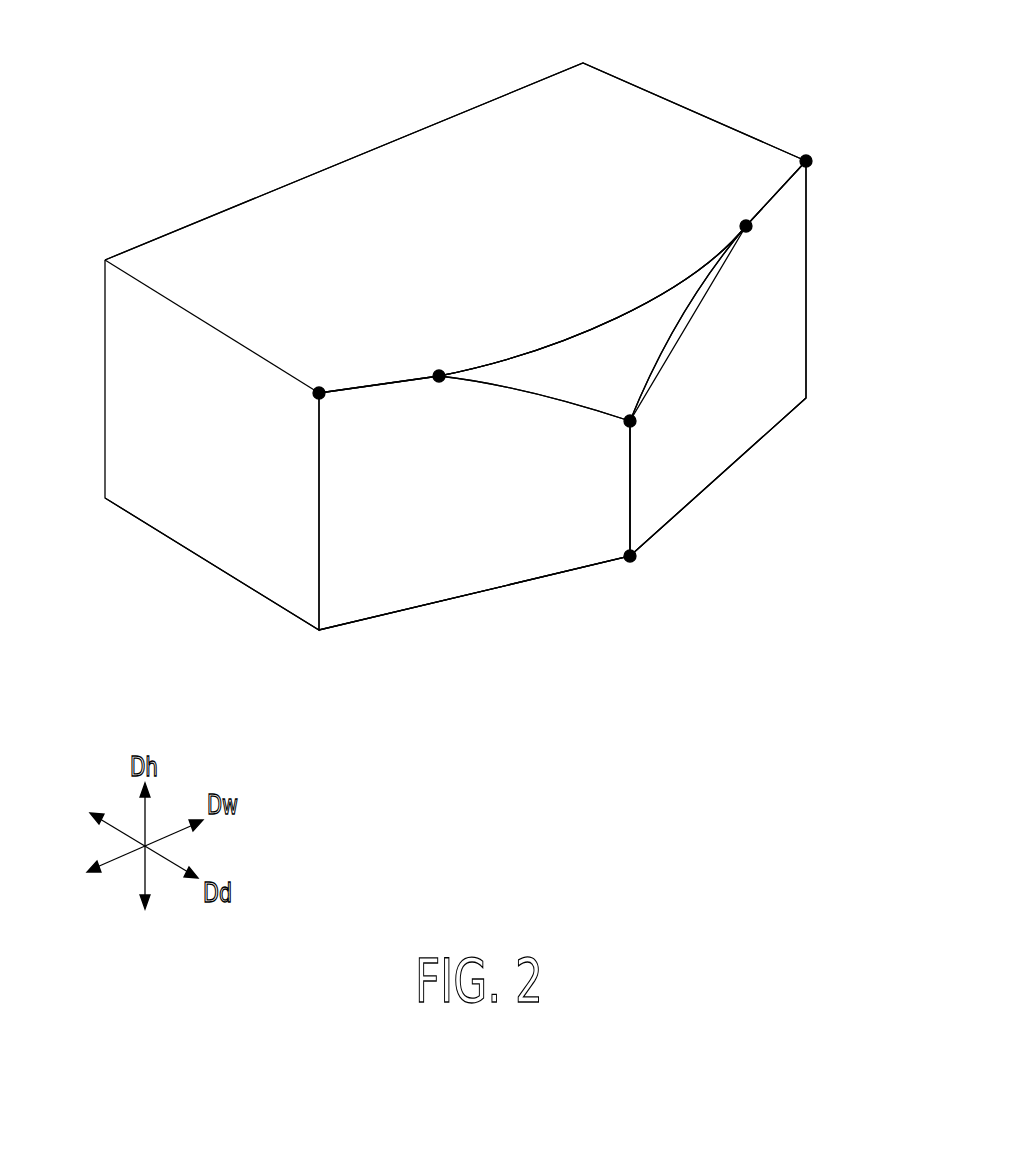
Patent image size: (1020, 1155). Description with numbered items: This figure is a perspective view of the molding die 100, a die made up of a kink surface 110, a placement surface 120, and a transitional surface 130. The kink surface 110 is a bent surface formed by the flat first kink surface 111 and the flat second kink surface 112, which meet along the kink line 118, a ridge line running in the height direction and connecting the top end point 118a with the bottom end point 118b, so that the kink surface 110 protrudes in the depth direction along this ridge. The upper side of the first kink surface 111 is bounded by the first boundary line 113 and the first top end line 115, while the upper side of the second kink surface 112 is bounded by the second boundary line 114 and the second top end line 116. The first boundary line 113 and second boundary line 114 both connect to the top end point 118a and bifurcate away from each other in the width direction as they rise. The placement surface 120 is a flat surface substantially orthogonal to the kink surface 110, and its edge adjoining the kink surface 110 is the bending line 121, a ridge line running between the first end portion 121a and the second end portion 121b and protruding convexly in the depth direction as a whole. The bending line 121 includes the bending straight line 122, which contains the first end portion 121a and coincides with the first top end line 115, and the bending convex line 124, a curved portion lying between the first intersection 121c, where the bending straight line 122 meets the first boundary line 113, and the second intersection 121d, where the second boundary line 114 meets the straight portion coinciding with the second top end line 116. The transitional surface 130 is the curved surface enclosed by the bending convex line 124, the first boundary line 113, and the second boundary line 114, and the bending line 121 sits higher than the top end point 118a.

The molding die 100 is at (316, 68).
The kink surface 110 is at (648, 527).
The first kink surface 111 is at (462, 570).
The second kink surface 112 is at (733, 432).
The first boundary line 113 is at (507, 381).
The second boundary line 114 is at (697, 294).
The first top end line 115 is at (362, 396).
The second top end line 116 is at (778, 196).
The kink line 118 is at (627, 490).
The top end point 118a is at (625, 425).
The bottom end point 118b is at (624, 555).
The placement surface 120 is at (460, 150).
The bending line 121 is at (562, 231).
The first end portion 121a is at (319, 388).
The second end portion 121b is at (808, 156).
The first intersection 121c is at (439, 371).
The second intersection 121d is at (742, 224).
The bending straight line 122 is at (760, 205).
The bending convex line 124 is at (527, 352).
The transitional surface 130 is at (595, 357).